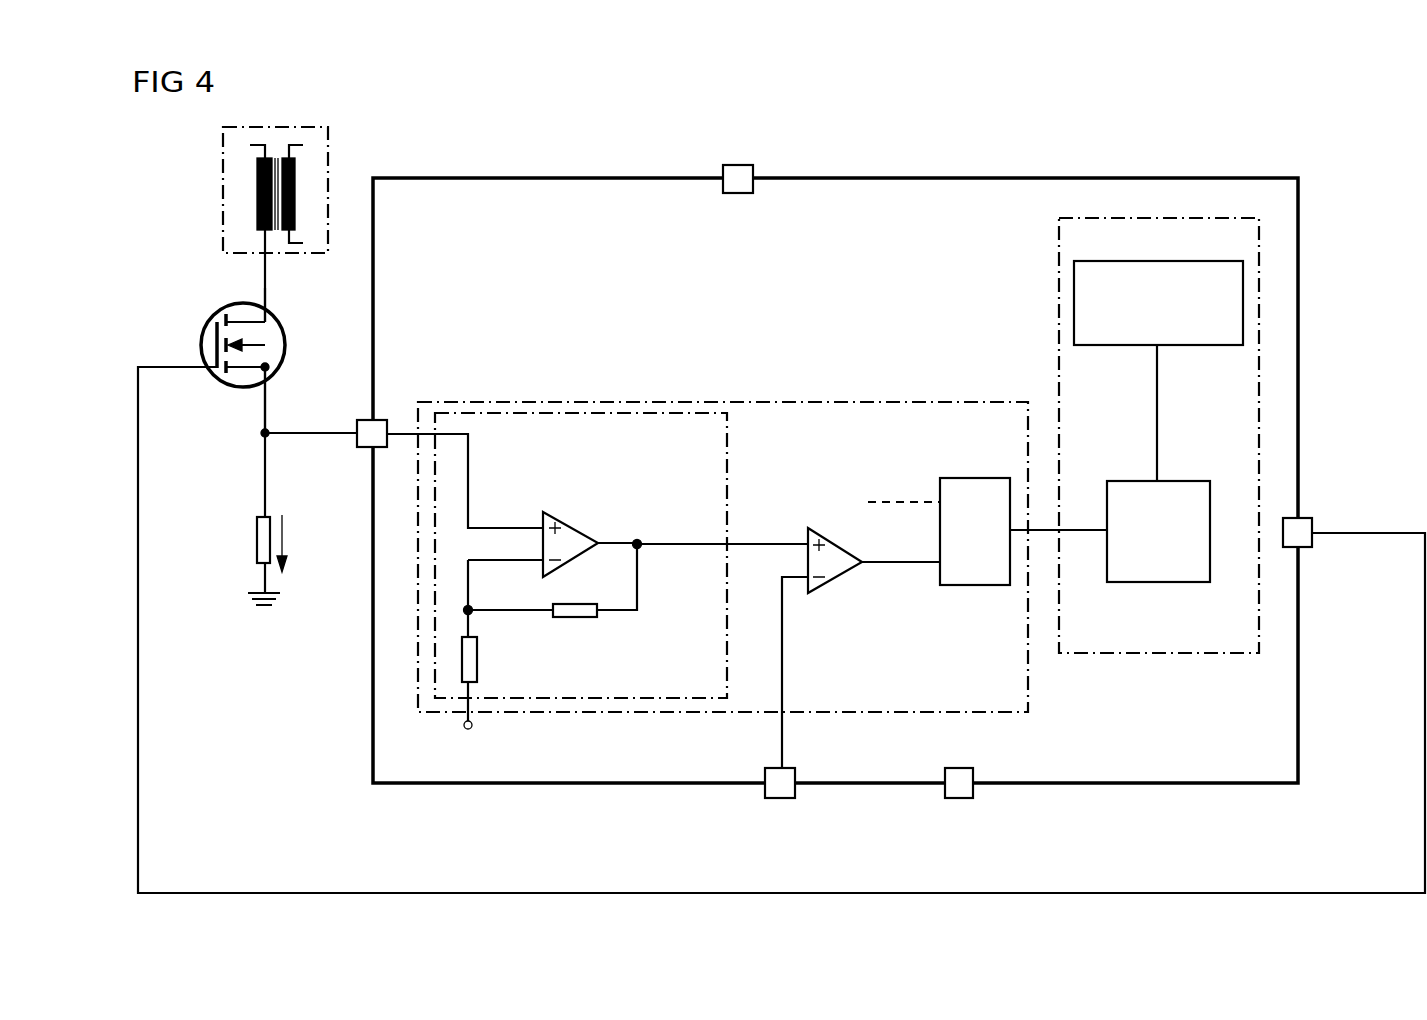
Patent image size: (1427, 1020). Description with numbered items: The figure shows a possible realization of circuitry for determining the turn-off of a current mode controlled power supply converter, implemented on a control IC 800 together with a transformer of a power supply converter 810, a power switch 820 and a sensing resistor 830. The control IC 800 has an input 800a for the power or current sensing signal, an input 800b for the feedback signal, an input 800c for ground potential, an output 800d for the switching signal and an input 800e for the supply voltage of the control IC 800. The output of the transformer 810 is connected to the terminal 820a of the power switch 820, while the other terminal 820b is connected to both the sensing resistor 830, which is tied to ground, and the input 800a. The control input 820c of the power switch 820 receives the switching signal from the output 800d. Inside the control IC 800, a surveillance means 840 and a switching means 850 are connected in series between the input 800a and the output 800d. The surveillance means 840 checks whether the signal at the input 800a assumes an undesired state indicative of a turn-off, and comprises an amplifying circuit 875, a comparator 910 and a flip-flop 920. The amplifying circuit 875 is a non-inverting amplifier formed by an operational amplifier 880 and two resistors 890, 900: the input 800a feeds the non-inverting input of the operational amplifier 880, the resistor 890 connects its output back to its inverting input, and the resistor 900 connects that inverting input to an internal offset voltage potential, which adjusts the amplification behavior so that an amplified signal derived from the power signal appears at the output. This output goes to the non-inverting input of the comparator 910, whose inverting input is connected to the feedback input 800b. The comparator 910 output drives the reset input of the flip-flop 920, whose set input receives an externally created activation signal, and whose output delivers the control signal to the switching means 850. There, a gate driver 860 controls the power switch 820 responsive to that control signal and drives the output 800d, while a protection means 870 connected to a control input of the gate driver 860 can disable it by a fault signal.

The control IC 800 is at (1240, 177).
The input for the power signal or current sensing signal 800a is at (365, 420).
The input for the feedback signal 800b is at (780, 802).
The input for a ground potential 800c is at (960, 800).
The output for a switching signal 800d is at (1312, 545).
The input for the power supply voltage 800e is at (738, 165).
The transformer of a power supply converter 810 is at (222, 190).
The power switch 820 is at (203, 343).
The terminal of the power switch 820a is at (264, 292).
The terminal of the power switch 820b is at (260, 407).
The control input of the power switch 820c is at (193, 368).
The sensing resistor 830 is at (257, 527).
The surveillance means 840 is at (898, 402).
The switching means 850 is at (1057, 255).
The gate driver 860 is at (1178, 481).
The protection means 870 is at (1185, 345).
The amplifying circuit 875 is at (735, 521).
The operational amplifier 880 is at (572, 523).
The resistor 890 is at (575, 620).
The resistor 900 is at (477, 660).
The comparator 910 is at (835, 590).
The flip-flop 920 is at (970, 585).